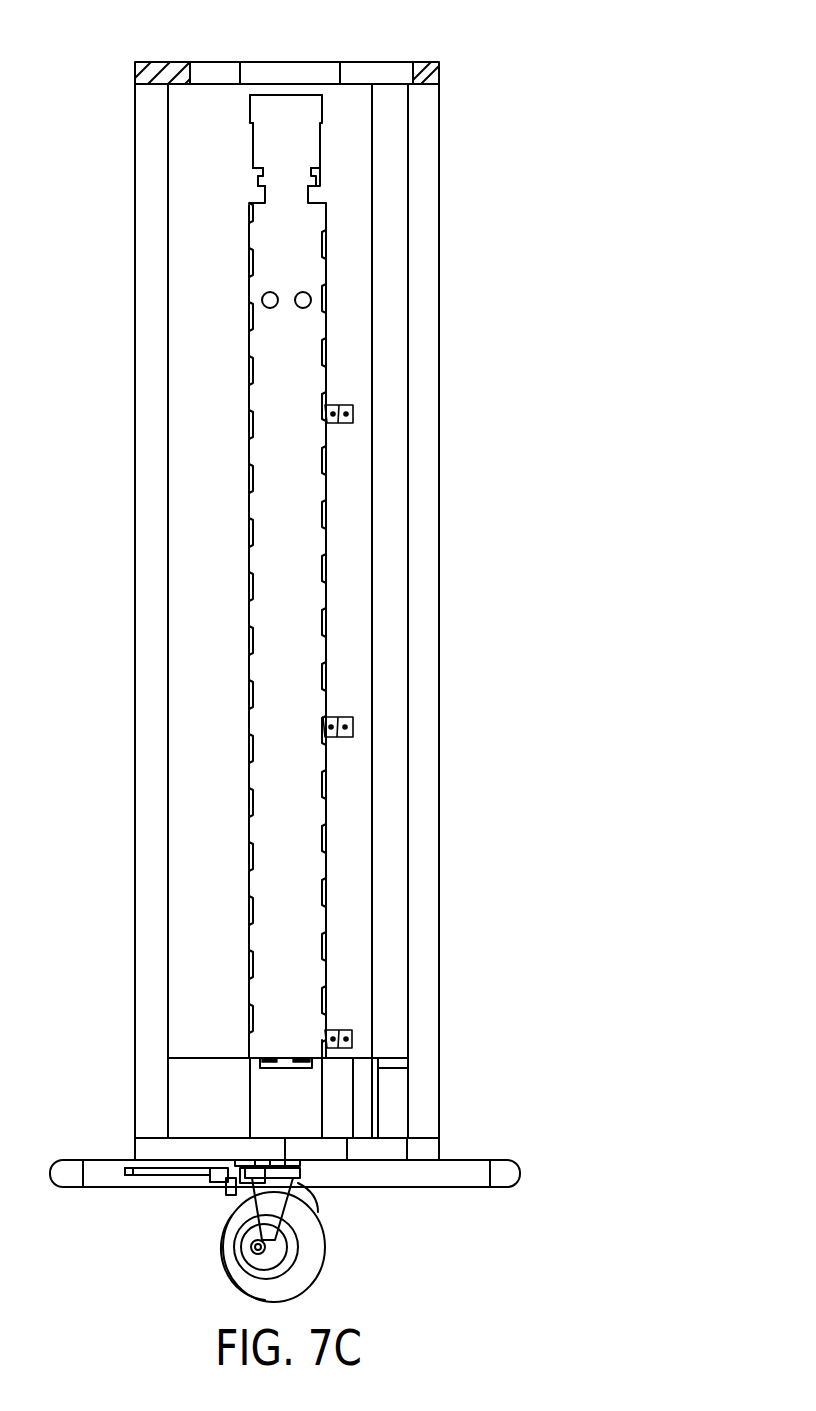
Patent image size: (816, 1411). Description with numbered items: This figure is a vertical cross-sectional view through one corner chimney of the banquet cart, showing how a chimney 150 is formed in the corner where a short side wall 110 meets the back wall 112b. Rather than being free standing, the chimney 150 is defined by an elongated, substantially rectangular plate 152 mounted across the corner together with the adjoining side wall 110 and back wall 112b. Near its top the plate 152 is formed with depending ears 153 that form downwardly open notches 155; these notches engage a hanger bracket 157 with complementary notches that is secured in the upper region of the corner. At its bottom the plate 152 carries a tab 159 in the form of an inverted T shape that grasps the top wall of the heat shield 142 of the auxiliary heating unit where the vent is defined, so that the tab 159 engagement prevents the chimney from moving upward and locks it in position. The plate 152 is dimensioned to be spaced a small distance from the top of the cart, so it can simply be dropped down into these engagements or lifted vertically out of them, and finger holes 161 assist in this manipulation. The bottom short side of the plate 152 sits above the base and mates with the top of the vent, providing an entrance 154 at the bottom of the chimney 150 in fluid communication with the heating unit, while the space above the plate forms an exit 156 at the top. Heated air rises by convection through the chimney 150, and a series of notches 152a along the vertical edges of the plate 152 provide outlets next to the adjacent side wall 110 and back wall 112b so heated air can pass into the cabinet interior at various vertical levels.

The side wall 110 is at (188, 575).
The back wall 112b is at (337, 507).
The heat shield 142 is at (185, 1055).
The chimney 150 is at (237, 432).
The elongated plate 152 is at (327, 267).
The notches 152a is at (325, 565).
The depending ears 153 is at (327, 165).
The entrance 154 is at (310, 1056).
The downwardly open notches 155 is at (257, 180).
The exit 156 is at (288, 97).
The hanger bracket 157 is at (250, 188).
The tab 159 is at (287, 1070).
The finger holes 161 is at (302, 309).